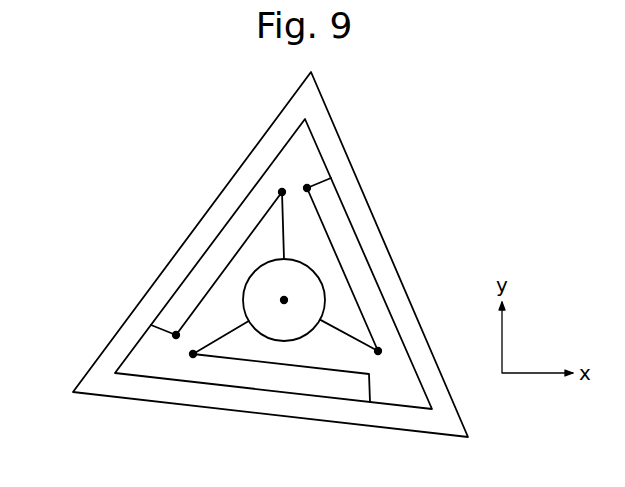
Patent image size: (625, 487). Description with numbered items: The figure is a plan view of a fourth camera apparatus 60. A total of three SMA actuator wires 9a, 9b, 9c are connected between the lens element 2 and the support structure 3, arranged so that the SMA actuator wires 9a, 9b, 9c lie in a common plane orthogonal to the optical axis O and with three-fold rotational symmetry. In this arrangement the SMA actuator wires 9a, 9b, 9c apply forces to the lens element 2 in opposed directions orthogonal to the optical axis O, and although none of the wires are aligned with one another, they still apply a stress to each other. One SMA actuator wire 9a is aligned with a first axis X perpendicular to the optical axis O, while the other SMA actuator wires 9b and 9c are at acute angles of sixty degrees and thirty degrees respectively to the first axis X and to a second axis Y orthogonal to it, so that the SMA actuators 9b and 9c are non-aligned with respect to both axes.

The fourth camera apparatus 60 is at (76, 282).
The support structure 3 is at (402, 306).
The SMA actuator wire 9a is at (237, 362).
The SMA actuator wire 9b is at (228, 267).
The SMA actuator wire 9c is at (344, 274).
The lens element 2 is at (303, 325).
The optical axis O is at (283, 300).